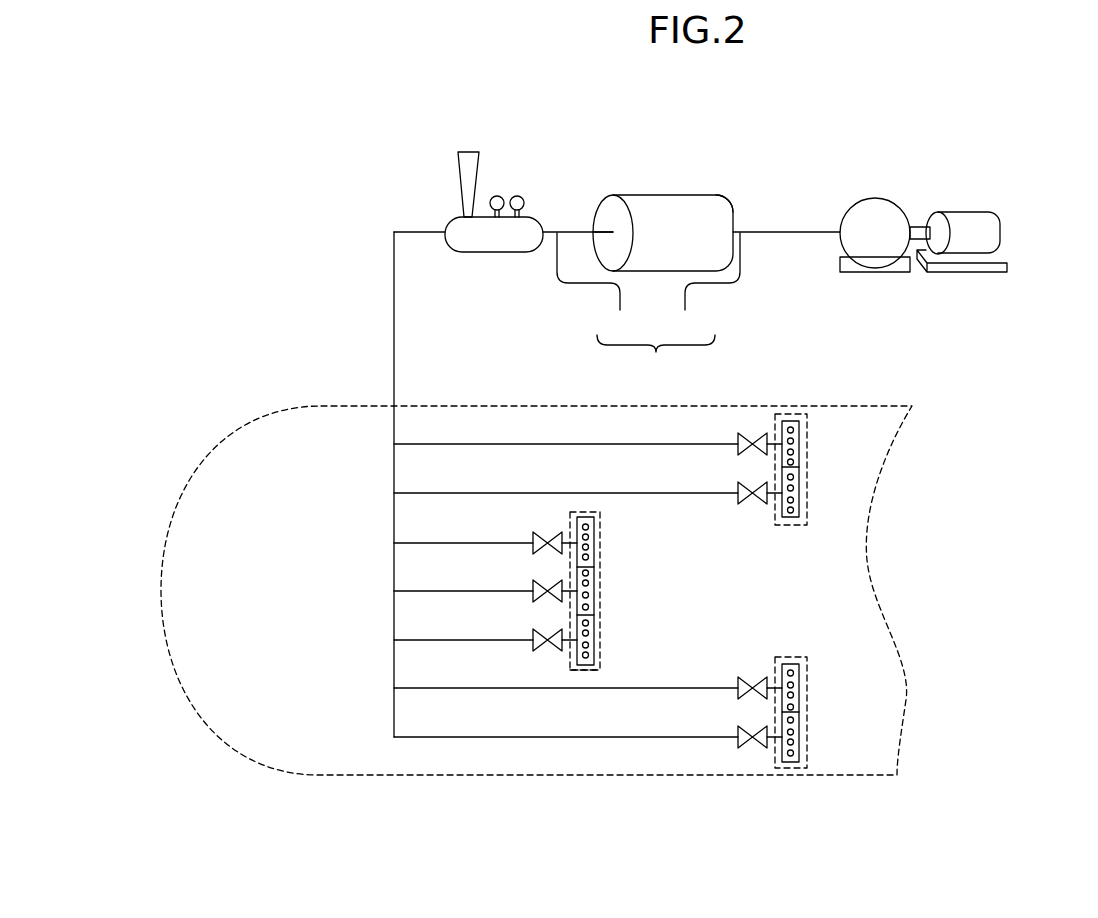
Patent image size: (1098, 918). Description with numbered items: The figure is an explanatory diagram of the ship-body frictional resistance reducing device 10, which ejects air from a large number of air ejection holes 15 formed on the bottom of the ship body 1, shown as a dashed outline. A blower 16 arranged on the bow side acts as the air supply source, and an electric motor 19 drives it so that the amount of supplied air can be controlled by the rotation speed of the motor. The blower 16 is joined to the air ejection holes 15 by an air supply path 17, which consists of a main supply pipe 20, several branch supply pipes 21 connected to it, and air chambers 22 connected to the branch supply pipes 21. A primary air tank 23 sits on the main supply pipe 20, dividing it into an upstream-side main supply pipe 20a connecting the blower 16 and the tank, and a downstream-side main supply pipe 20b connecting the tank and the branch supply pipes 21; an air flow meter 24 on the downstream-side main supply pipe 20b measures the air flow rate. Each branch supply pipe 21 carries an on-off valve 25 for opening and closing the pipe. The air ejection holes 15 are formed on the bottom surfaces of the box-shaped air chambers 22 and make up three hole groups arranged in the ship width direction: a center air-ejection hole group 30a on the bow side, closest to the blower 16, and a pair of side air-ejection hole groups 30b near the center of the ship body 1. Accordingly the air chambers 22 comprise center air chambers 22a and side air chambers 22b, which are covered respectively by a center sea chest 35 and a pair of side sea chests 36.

The ship body 1 is at (270, 419).
The ship-body frictional resistance reducing device 10 is at (968, 143).
The air ejection holes 15 is at (592, 583).
The blower 16 is at (875, 198).
The air supply path 17 is at (645, 172).
The electric motor 19 is at (1005, 225).
The main supply pipe 20 is at (656, 360).
The upstream-side main supply pipe 20a is at (706, 285).
The downstream-side main supply pipe 20b is at (601, 285).
The branch supply pipes 21 is at (416, 493).
The air chambers 22 is at (594, 547).
The center air chambers 22a is at (594, 630).
The side air chambers 22b is at (800, 483).
The primary air tank 23 is at (730, 195).
The air flow meter 24 is at (448, 218).
The on-off valve 25 is at (753, 698).
The center air-ejection hole group 30a is at (596, 655).
The side air-ejection hole groups 30b is at (798, 422).
The center sea chest 35 is at (578, 672).
The side sea chests 36 is at (806, 700).